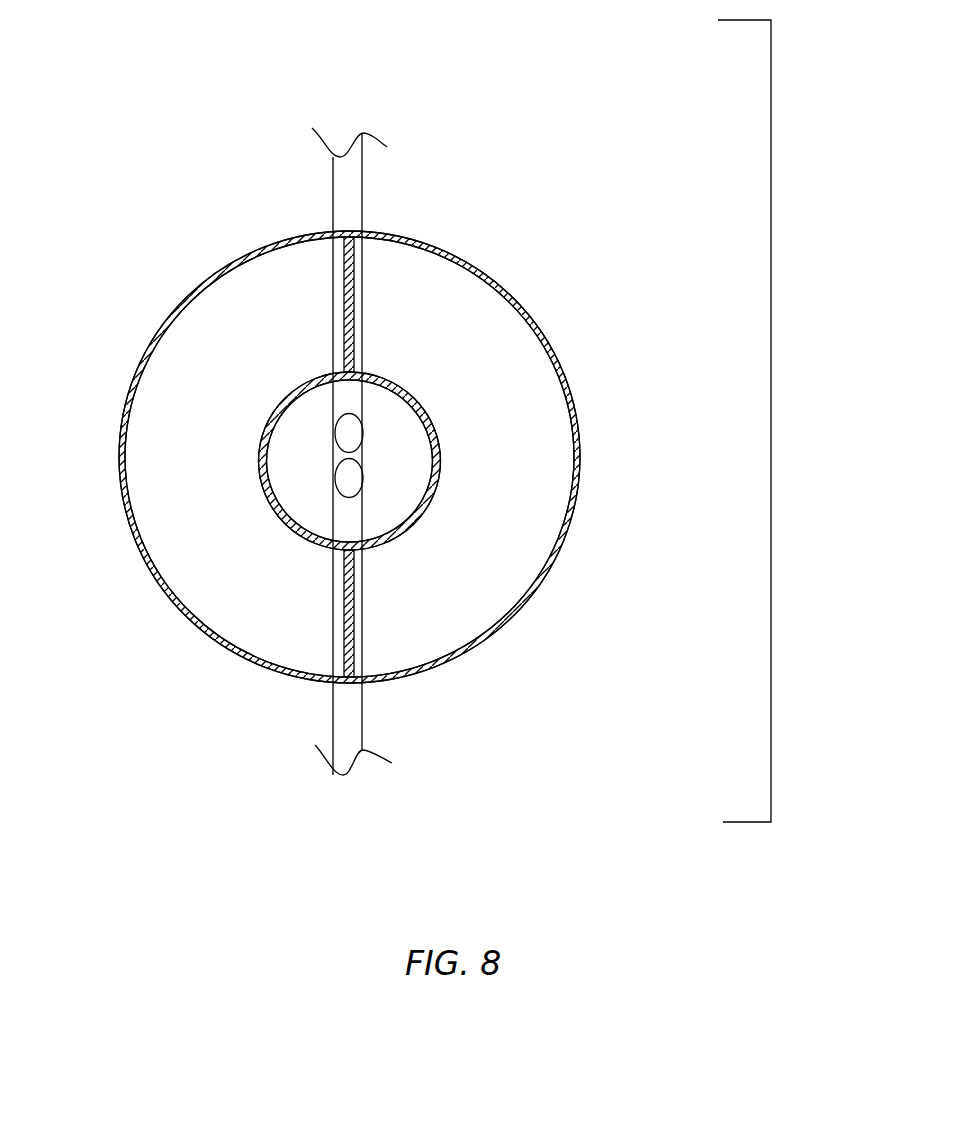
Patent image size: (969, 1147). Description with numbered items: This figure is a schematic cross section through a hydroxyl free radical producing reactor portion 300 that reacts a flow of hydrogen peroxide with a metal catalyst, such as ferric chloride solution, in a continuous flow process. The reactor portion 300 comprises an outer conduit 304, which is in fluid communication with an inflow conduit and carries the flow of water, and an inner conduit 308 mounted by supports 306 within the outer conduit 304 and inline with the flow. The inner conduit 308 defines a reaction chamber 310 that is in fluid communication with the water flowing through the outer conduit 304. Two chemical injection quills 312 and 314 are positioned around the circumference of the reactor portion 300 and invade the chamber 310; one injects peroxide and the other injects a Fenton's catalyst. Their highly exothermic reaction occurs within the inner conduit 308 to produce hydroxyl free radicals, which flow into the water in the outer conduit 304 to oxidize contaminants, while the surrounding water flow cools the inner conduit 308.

The reactor portion 300 is at (771, 443).
The outer conduit 304 is at (557, 355).
The supports 306 is at (353, 313).
The inner conduit 308 is at (430, 498).
The reaction chamber 310 is at (308, 442).
The chemical injection quill 312 is at (347, 196).
The chemical injection quill 314 is at (348, 715).